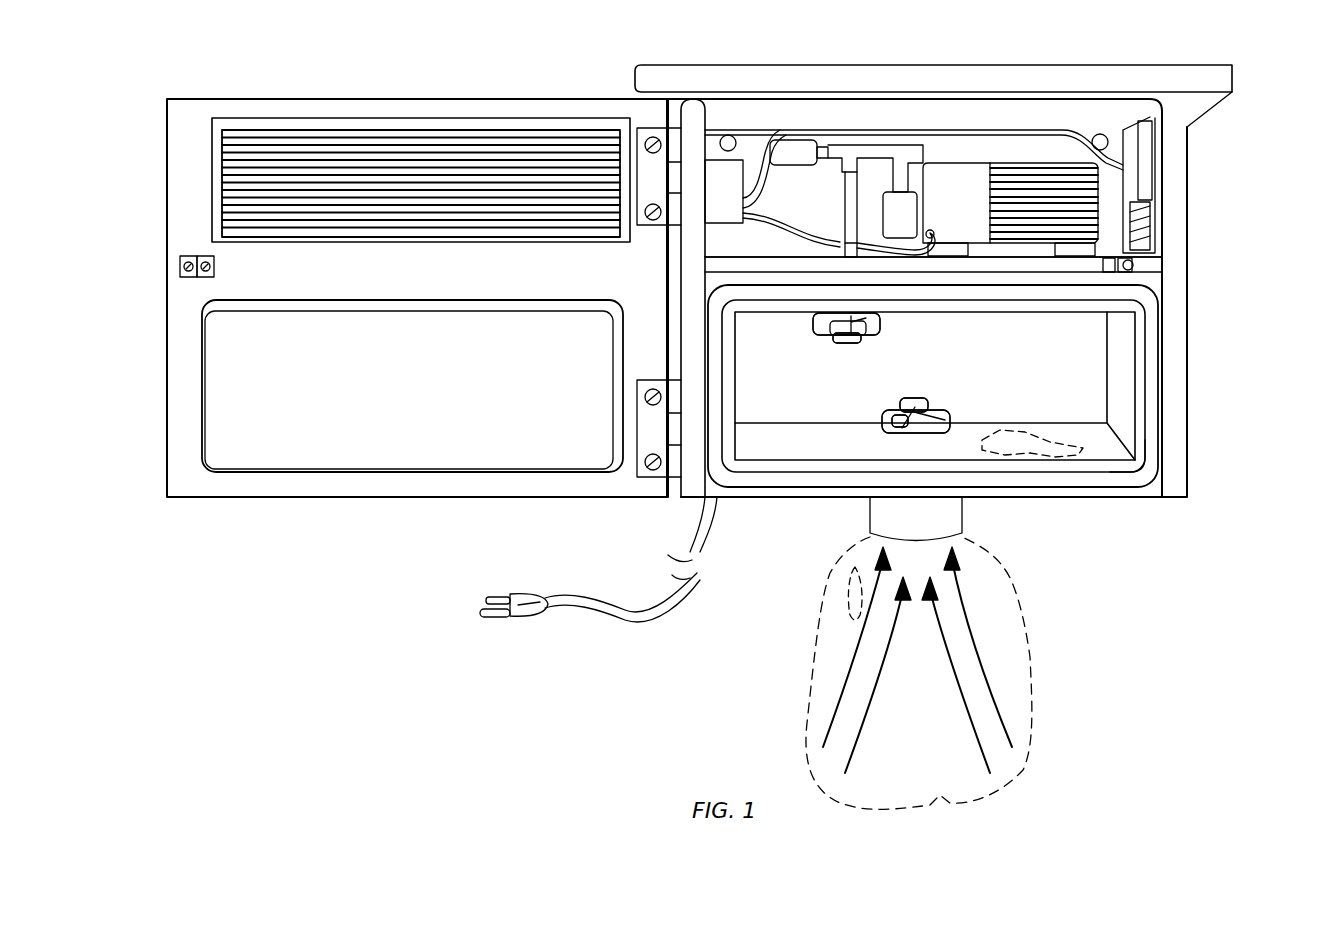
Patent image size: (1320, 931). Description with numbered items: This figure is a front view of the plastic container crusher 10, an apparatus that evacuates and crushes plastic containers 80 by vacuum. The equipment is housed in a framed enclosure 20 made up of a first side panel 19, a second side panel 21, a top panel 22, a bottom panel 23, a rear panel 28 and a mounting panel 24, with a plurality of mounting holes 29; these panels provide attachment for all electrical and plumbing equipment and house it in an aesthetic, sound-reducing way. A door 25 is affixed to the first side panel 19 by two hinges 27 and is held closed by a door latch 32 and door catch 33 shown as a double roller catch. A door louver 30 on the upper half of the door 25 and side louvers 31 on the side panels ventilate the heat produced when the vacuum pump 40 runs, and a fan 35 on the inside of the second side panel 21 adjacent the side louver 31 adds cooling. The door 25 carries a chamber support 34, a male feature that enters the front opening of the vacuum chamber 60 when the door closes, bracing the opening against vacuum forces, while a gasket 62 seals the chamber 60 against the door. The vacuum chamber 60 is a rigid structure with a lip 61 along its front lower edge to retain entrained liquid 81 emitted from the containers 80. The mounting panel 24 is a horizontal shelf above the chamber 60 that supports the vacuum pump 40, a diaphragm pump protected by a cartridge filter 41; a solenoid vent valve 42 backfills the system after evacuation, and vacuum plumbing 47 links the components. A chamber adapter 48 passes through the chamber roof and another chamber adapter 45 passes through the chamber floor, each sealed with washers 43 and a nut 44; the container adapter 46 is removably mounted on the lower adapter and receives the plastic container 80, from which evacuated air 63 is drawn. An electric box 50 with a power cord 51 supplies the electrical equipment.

The plastic container crusher 10 is at (268, 672).
The first side panel 19 is at (697, 117).
The enclosure 20 is at (1145, 556).
The second side panel 21 is at (1187, 270).
The top panel 22 is at (1178, 66).
The bottom panel 23 is at (807, 498).
The mounting panel 24 is at (1050, 268).
The door 25 is at (277, 497).
The hinge 27 is at (638, 213).
The rear panel 28 is at (1068, 142).
The mounting hole 29 is at (727, 136).
The door louver 30 is at (552, 130).
The side louver 31 is at (1147, 208).
The door latch 32 is at (197, 277).
The door catch 33 is at (1142, 263).
The chamber support 34 is at (392, 420).
The fan 35 is at (1147, 165).
The vacuum pump 40 is at (982, 187).
The filter 41 is at (895, 210).
The vent valve 42 is at (800, 145).
The washer 43 is at (827, 325).
The nut 44 is at (817, 318).
The first chamber adapter 45 is at (940, 437).
The container adapter 46 is at (952, 523).
The vacuum plumbing 47 is at (903, 155).
The second chamber adapter 48 is at (843, 338).
The electric box 50 is at (732, 192).
The power cord 51 is at (637, 608).
The vacuum chamber 60 is at (1100, 369).
The lip 61 is at (947, 418).
The gasket 62 is at (1148, 473).
The evacuated air 63 is at (1007, 733).
The plastic container 80 is at (998, 630).
The entrained liquid 81 is at (1053, 453).